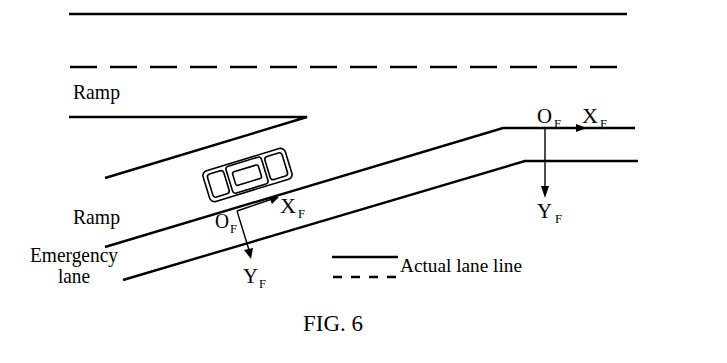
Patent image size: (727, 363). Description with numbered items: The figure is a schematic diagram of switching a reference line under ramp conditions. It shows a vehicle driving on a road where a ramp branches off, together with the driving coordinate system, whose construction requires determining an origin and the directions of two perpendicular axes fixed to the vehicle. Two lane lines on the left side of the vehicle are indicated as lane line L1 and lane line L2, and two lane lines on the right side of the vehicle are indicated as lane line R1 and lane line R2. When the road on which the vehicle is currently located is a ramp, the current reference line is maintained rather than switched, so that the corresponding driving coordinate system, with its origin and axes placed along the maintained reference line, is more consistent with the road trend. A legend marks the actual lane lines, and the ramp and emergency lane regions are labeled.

The lane line L1 is at (348, 83).
The lane line L2 is at (348, 28).
The lane line R1 is at (370, 187).
The lane line R2 is at (380, 220).